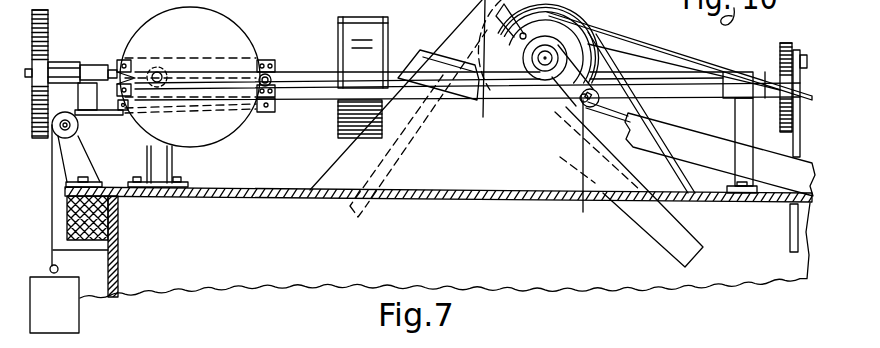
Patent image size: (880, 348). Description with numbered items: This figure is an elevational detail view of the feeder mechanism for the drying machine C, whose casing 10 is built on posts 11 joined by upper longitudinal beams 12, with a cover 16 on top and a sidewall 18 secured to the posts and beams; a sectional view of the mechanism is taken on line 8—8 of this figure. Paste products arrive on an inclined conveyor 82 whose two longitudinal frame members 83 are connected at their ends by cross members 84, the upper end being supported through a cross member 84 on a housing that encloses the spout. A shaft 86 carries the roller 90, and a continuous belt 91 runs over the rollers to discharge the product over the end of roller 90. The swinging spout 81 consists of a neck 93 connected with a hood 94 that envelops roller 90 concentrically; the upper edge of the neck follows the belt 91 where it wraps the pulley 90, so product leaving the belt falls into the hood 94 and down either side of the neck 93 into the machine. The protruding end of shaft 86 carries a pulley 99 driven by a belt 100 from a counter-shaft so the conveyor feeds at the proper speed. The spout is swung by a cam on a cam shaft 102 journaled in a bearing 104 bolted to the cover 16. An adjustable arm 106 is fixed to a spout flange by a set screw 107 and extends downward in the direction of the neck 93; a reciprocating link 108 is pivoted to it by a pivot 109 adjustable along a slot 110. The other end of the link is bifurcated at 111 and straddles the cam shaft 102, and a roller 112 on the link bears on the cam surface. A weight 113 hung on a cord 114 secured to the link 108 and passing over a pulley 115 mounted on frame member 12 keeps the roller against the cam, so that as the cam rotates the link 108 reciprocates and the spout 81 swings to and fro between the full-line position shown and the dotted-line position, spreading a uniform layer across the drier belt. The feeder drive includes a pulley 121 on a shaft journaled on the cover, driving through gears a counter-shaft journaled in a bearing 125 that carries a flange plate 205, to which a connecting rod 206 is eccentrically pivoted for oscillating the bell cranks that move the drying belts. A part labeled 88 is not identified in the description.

The section line 8 is at (551, 297).
The casing 10 is at (308, 282).
The posts 11 is at (93, 283).
The upper longitudinal beam 12 is at (118, 218).
The cover 16 is at (455, 197).
The sidewall 18 is at (120, 263).
The swinging spout 81 is at (667, 248).
The conveyor 82 is at (690, 48).
The longitudinal frame members 83 is at (717, 165).
The cross members 84 is at (433, 50).
The shaft 86 is at (543, 60).
The rod 88 is at (449, 35).
The roller 90 is at (587, 22).
The continuous belt 91 is at (686, 56).
The neck 93 is at (620, 212).
The hood 94 is at (485, 69).
The pulley 99 is at (596, 62).
The belt 100 is at (638, 43).
The cam shaft 102 is at (155, 73).
The bearing 104 is at (323, 82).
The adjustable arm 106 is at (552, 72).
The set screw 107 is at (438, 108).
The reciprocating link 108 is at (292, 100).
The pivot 109 is at (579, 167).
The slot 110 is at (572, 110).
The bifurcated portion 111 is at (265, 58).
The roller 112 is at (278, 74).
The weight 113 is at (65, 316).
The cord 114 is at (122, 248).
The pulley 115 is at (55, 128).
The pulley 121 is at (342, 126).
The bearing 125 is at (745, 121).
The flange plate 205 is at (780, 48).
The connecting rod 206 is at (790, 238).
The drying machine C is at (252, 283).